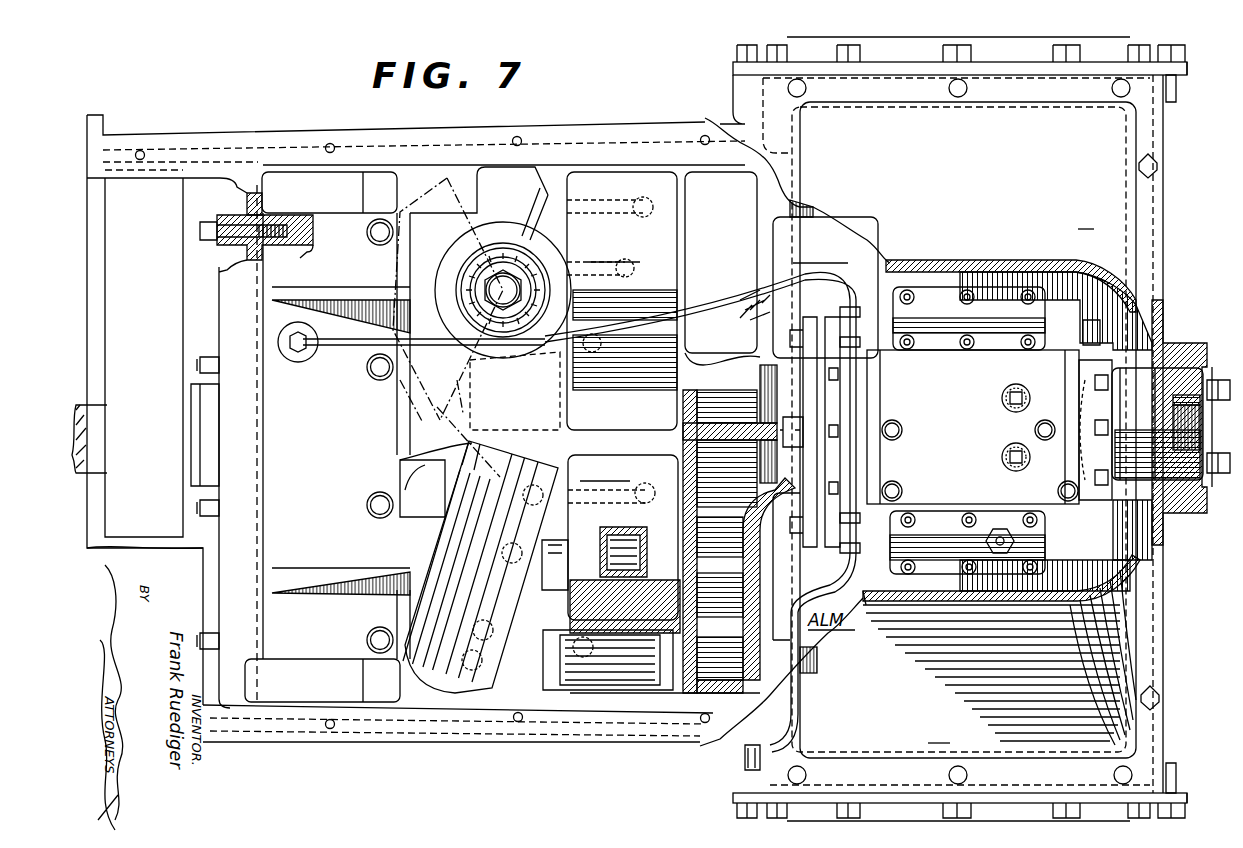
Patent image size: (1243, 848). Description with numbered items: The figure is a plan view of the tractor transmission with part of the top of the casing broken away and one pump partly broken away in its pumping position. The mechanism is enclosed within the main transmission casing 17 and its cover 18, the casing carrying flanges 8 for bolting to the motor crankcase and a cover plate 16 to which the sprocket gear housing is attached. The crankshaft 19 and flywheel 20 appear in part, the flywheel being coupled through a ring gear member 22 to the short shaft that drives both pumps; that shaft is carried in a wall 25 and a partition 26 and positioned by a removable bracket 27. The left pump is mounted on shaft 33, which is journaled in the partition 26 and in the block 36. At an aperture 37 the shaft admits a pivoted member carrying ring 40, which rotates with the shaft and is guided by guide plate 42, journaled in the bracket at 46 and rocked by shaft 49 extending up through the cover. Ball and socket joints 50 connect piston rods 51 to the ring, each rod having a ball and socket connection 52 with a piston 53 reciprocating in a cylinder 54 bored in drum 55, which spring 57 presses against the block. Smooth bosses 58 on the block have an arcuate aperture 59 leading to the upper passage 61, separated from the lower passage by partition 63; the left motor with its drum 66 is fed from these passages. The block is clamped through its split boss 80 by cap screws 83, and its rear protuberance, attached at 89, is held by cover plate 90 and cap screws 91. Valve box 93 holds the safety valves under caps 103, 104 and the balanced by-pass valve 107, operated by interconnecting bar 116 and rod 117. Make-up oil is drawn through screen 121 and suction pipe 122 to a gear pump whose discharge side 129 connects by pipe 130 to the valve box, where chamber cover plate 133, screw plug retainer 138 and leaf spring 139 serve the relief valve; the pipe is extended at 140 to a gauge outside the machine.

The flanges 8 is at (103, 120).
The cover plate 16 is at (1033, 48).
The main transmission casing 17 is at (640, 150).
The cover 18 is at (999, 657).
The crankshaft 19 is at (90, 415).
The flywheel 20 is at (160, 295).
The ring gear member 22 is at (190, 442).
The wall 25 is at (257, 200).
The partition 26 is at (375, 197).
The bracket 27 is at (346, 401).
The shaft 33 is at (400, 568).
The block 36 is at (743, 188).
The aperture 37 is at (575, 515).
The ring 40 is at (545, 190).
The guide plate 42 is at (485, 165).
The journal 46 is at (540, 265).
The shaft 49 is at (503, 270).
The ball and socket joints 50 is at (578, 195).
The piston rods 51 is at (620, 210).
The ball and socket connection 52 is at (640, 212).
The piston 53 is at (625, 575).
The cylinder 54 is at (655, 513).
The drum 55 is at (660, 180).
The spring 57 is at (582, 541).
The bosses 58 is at (680, 280).
The arcuate aperture 59 is at (725, 530).
The upper passage 61 is at (737, 522).
The partition 63 is at (775, 393).
The drum 66 is at (1100, 303).
The boss 80 is at (700, 455).
The cap screws 83 is at (1170, 375).
The attachment 89 is at (1185, 420).
The cover plate 90 is at (1200, 332).
The cap screws 91 is at (1210, 505).
The valve box 93 is at (968, 403).
The cap 103 is at (840, 392).
The cap 104 is at (1080, 395).
The balanced valve 107 is at (1080, 330).
The interconnecting bar 116 is at (810, 318).
The rod 117 is at (800, 398).
The screen 121 is at (705, 370).
The suction pipe 122 is at (525, 435).
The discharge side 129 is at (310, 327).
The pipe 130 is at (718, 300).
The cover plate 133 is at (993, 300).
The screw plug retainer 138 is at (1003, 530).
The leaf spring 139 is at (985, 530).
The pipe extension 140 is at (830, 585).